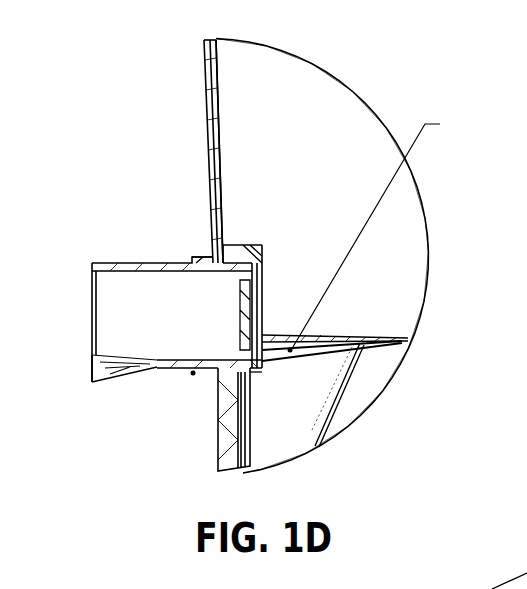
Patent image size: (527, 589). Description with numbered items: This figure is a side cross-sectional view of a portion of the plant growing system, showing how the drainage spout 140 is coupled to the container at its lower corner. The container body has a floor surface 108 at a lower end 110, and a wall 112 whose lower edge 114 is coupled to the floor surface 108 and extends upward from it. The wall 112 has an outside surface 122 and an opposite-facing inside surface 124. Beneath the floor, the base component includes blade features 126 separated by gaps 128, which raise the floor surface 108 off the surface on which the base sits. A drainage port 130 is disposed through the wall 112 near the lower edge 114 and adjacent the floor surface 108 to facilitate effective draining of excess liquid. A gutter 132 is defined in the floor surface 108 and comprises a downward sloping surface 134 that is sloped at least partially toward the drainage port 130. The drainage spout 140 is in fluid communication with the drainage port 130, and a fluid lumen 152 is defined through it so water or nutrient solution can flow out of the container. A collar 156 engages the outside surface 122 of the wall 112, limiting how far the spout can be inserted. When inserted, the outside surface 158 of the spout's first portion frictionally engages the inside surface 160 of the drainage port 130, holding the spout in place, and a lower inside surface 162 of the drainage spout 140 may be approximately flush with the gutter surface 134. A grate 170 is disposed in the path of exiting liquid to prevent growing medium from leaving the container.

The floor surface 108 is at (383, 340).
The lower end 110 is at (448, 348).
The wall 112 is at (190, 134).
The lower edge 114 is at (340, 358).
The outside surface 122 is at (210, 82).
The inside surface 124 is at (219, 98).
The blade features 126 is at (272, 447).
The gaps 128 is at (362, 385).
The drainage port 130 is at (270, 302).
The gutter 132 is at (385, 231).
The downward sloping surface 134 is at (337, 333).
The drainage spout 140 is at (159, 250).
The fluid lumen 152 is at (113, 340).
The collar 156 is at (190, 378).
The outside surface 158 is at (221, 245).
The inside surface 160 is at (240, 274).
The lower inside surface 162 is at (160, 356).
The grate 170 is at (257, 262).